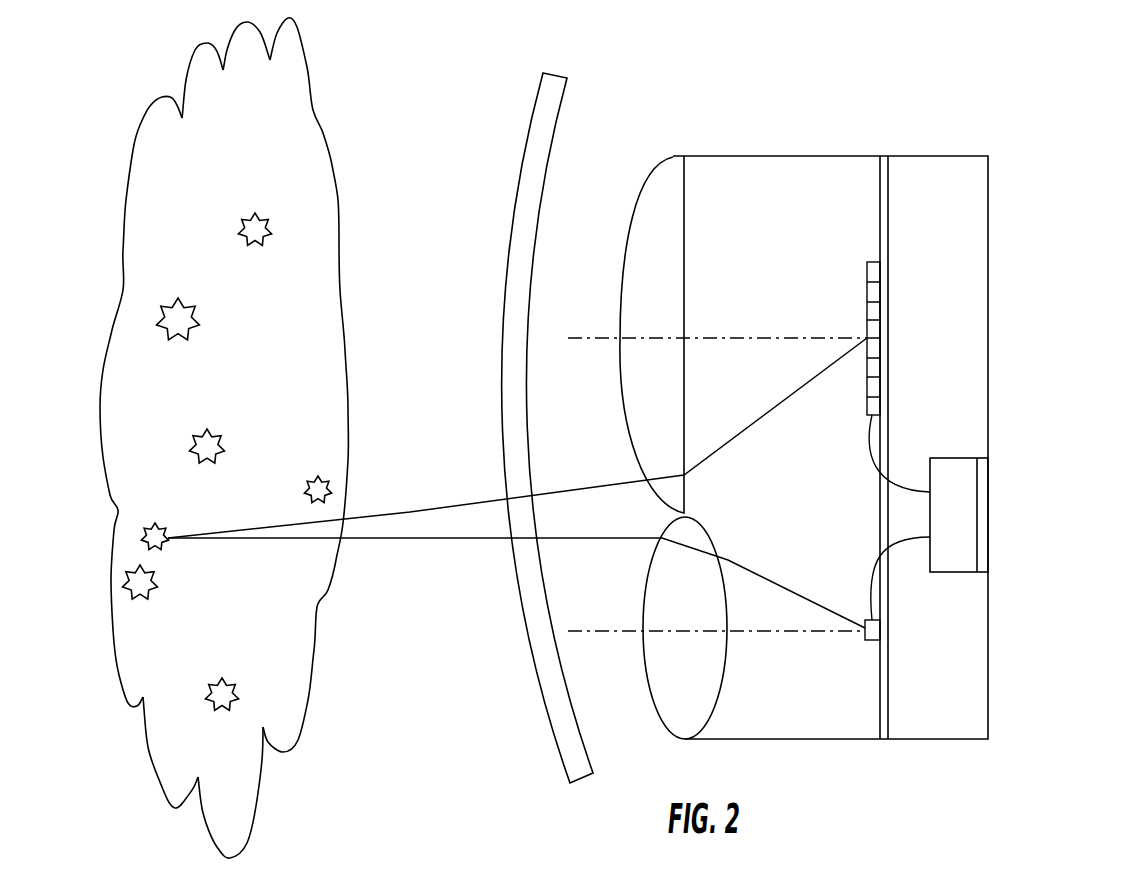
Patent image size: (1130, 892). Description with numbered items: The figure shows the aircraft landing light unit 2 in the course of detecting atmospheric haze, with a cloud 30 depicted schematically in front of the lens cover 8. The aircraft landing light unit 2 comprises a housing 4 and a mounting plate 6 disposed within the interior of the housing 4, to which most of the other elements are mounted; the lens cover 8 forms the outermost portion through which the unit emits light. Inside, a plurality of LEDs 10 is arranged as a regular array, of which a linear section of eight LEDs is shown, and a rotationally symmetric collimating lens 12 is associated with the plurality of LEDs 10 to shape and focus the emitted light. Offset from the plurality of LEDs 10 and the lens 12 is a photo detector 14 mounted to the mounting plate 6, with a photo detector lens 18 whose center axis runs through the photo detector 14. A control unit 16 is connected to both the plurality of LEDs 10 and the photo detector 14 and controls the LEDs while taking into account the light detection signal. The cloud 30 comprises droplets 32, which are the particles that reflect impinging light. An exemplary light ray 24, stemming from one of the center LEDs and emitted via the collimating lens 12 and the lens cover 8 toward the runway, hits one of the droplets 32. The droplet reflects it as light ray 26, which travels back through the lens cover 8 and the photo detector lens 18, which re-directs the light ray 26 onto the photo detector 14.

The aircraft landing light unit 2 is at (1044, 303).
The housing 4 is at (840, 740).
The mounting plate 6 is at (889, 695).
The lens cover 8 is at (575, 728).
The plurality of LEDs 10 is at (867, 385).
The lens 12 is at (685, 315).
The photo detector 14 is at (872, 643).
The control unit 16 is at (948, 458).
The photo detector lens 18 is at (700, 527).
The light ray 24 is at (410, 512).
The reflected light ray 26 is at (410, 538).
The cloud 30 is at (340, 213).
The droplets 32 is at (262, 215).